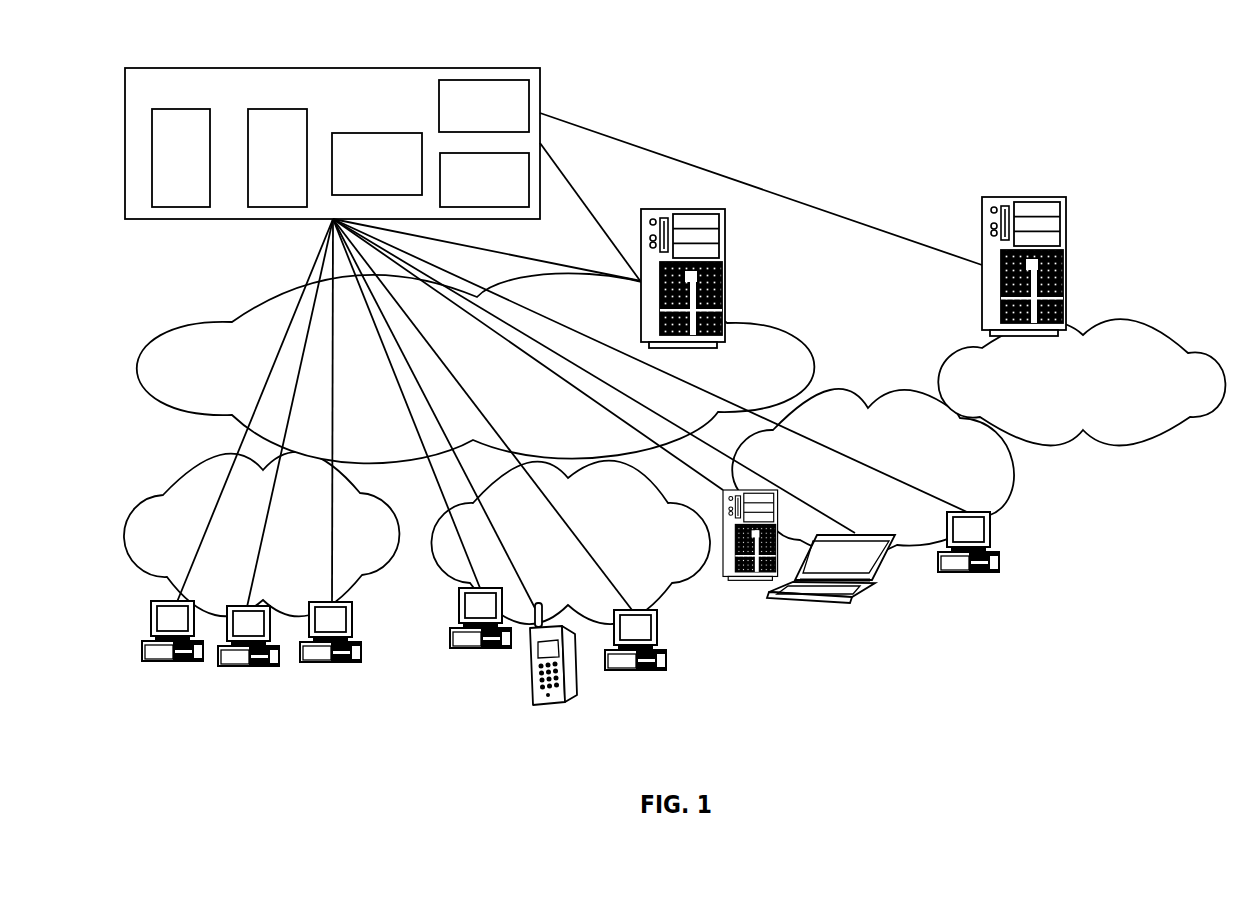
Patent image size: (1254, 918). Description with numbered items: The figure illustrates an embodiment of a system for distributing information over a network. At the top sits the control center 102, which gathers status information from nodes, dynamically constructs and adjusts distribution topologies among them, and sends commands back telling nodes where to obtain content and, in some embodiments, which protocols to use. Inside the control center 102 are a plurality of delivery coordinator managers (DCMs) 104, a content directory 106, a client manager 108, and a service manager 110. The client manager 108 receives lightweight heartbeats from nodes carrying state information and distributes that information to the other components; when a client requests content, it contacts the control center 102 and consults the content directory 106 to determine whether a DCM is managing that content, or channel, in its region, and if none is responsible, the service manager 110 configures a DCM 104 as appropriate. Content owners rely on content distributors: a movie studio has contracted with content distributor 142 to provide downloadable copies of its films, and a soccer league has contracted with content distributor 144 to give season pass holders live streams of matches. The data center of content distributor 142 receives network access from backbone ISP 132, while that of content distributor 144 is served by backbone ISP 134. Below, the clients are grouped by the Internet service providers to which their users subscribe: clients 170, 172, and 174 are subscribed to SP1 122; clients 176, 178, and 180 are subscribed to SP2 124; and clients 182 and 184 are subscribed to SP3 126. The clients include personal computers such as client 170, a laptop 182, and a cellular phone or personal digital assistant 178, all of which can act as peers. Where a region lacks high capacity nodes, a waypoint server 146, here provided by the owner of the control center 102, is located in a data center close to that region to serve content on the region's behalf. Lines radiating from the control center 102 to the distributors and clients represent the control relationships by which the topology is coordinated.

The control center 102 is at (370, 144).
The delivery coordinator manager 104 is at (173, 207).
The content directory 106 is at (403, 195).
The client manager 108 is at (493, 207).
The service manager 110 is at (458, 80).
The SP1 122 is at (388, 570).
The SP2 124 is at (687, 583).
The SP3 126 is at (997, 510).
The backbone ISP 132 is at (795, 333).
The backbone ISP 134 is at (952, 355).
The content distributor 142 is at (682, 209).
The content distributor 144 is at (982, 202).
The waypoint server 146 is at (730, 580).
The client 170 is at (160, 662).
The client 172 is at (248, 667).
The client 174 is at (312, 662).
The client 176 is at (458, 650).
The cellular phone/personal digital assistant 178 is at (543, 698).
The client 180 is at (637, 672).
The laptop 182 is at (788, 603).
The client 184 is at (950, 573).